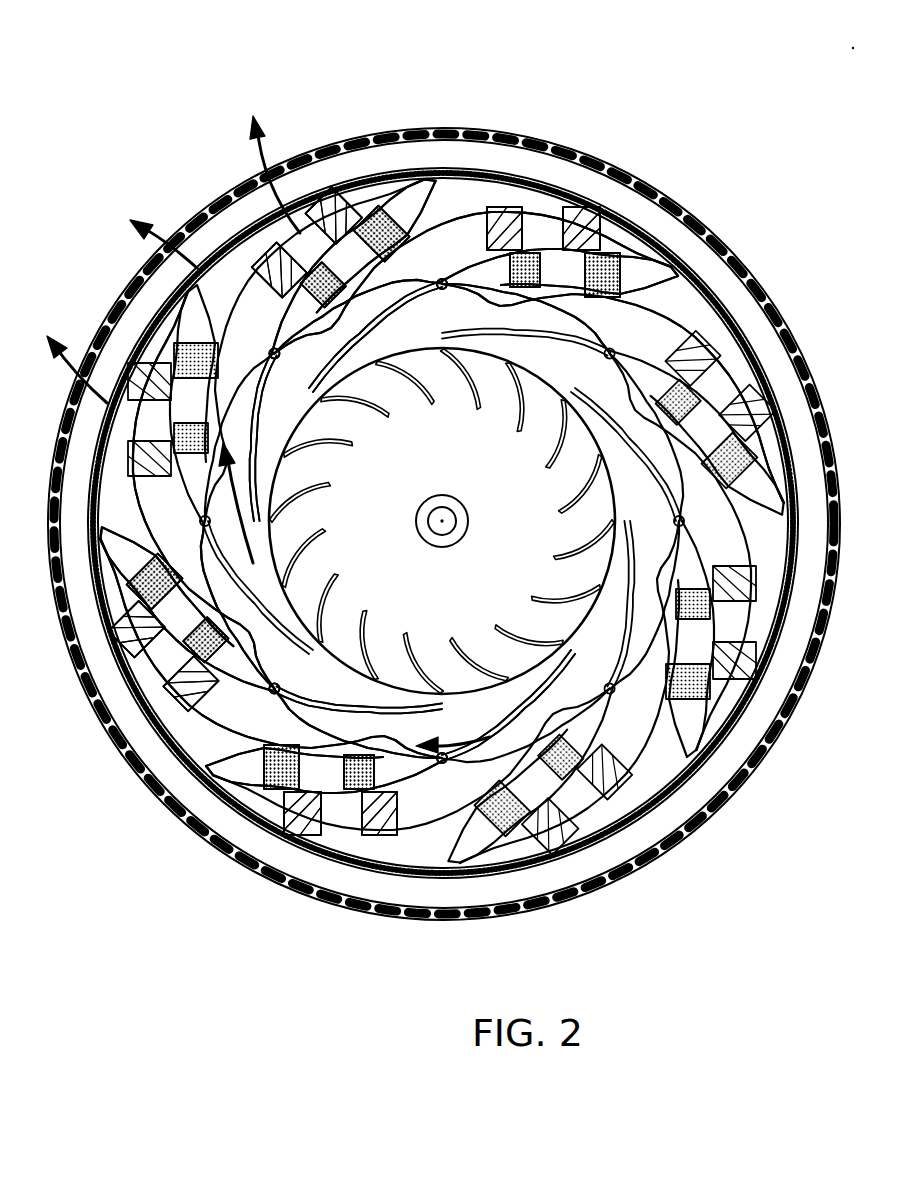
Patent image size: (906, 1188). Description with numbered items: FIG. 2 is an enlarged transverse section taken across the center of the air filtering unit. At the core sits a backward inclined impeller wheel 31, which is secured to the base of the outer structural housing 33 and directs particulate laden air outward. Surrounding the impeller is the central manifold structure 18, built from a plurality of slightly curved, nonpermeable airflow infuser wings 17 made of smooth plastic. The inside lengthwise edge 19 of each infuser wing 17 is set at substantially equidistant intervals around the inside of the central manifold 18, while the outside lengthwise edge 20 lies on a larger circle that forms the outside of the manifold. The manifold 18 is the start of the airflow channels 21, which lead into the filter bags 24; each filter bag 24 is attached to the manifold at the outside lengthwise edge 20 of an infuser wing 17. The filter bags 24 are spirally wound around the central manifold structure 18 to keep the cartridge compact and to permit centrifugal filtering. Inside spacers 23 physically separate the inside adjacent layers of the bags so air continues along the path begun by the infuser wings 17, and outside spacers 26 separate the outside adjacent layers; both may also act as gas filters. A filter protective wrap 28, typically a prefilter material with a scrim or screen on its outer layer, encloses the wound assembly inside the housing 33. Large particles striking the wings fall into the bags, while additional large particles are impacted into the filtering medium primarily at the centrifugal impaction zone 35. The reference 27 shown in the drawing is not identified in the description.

The airflow infuser wing 17 is at (353, 312).
The central manifold structure 18 is at (325, 355).
The inside lengthwise edge 19 is at (250, 400).
The outside lengthwise edge 20 is at (480, 303).
The airflow channel 21 is at (150, 432).
The inside spacer 23 is at (193, 668).
The filter bag 24 is at (118, 580).
The outside spacer 26 is at (300, 740).
The channel 27 is at (470, 840).
The filter protective wrap 28 is at (470, 855).
The backward inclined impeller wheel 31 is at (525, 532).
The outer structural housing 33 is at (645, 865).
The centrifugal impaction zone 35 is at (535, 275).